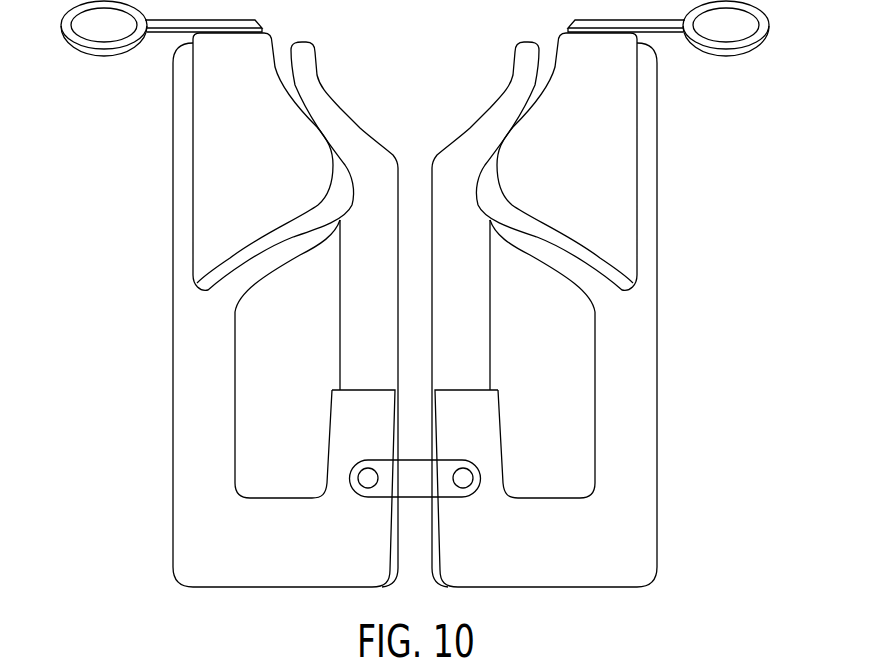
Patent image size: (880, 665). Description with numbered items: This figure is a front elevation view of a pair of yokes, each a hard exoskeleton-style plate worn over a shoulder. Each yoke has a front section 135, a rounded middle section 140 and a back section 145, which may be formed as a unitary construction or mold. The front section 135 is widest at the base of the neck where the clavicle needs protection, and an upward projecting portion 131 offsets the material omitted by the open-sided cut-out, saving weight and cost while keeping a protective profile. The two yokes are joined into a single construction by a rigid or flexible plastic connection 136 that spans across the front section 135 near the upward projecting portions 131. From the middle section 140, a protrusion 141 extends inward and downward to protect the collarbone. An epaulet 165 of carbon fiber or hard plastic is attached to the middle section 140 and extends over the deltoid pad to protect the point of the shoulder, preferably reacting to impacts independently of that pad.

The upward projecting portion 131 is at (343, 425).
The front section 135 is at (186, 425).
The plastic connection 136 is at (387, 486).
The middle section 140 is at (205, 143).
The protrusion 141 is at (293, 123).
The back section 145 is at (386, 312).
The epaulet 165 is at (82, 27).